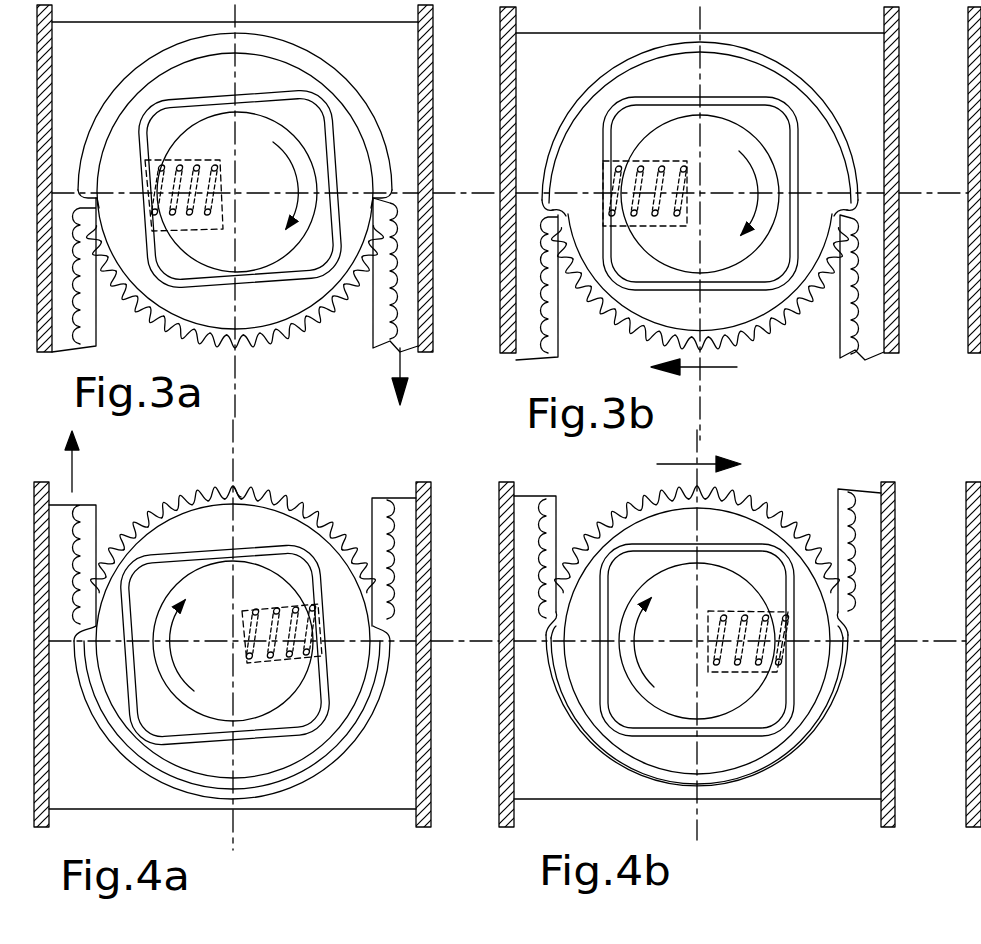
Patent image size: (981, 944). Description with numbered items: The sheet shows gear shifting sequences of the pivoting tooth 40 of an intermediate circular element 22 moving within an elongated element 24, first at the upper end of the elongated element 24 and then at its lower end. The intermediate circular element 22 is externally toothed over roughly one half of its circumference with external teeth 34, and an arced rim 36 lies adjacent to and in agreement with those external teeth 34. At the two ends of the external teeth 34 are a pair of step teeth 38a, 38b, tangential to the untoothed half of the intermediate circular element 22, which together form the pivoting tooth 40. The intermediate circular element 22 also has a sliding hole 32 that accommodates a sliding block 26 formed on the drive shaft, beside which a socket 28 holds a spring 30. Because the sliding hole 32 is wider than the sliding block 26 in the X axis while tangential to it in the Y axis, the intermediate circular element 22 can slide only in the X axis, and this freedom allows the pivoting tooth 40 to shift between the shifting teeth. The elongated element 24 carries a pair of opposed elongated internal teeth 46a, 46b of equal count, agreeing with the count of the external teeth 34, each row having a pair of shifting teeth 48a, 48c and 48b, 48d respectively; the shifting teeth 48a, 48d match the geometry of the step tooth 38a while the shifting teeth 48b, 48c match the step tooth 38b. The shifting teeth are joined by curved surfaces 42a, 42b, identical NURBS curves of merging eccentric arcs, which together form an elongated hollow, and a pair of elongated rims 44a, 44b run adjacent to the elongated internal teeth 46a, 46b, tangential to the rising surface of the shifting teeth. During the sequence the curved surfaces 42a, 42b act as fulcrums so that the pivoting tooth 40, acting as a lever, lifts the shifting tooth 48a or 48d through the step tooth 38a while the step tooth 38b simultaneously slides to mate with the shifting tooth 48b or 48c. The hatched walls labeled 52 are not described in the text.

In FIG. 4A, the intermediate circular element 22 is at (183, 534).
In FIG. 4A, the elongated element 24 is at (392, 798).
In FIG. 4A, the sliding block 26 is at (313, 723).
In FIG. 4A, the socket 28 is at (303, 684).
In FIG. 4A, the spring 30 is at (323, 624).
In FIG. 4A, the sliding hole 32 is at (130, 585).
In FIG. 4A, the external teeth 34 is at (311, 517).
In FIG. 4A, the arced rim 36 is at (245, 492).
In FIG. 3B, the step tooth 38a is at (853, 194).
In FIG. 4B, the step tooth 38a is at (556, 614).
In FIG. 3B, the step tooth 38b is at (541, 186).
In FIG. 4B, the step tooth 38b is at (842, 639).
In FIG. 4A, the pivoting tooth 40 is at (305, 708).
In FIG. 4A, the curved surface 42a is at (292, 777).
In FIG. 4B, the curved surface 42a is at (839, 693).
In FIG. 3B, the curved surface 42b is at (853, 153).
In FIG. 4A, the elongated rim 44a is at (94, 513).
In FIG. 4A, the elongated rim 44b is at (373, 519).
In FIG. 4A, the elongated internal teeth 46a is at (381, 505).
In FIG. 4A, the elongated internal teeth 46b is at (394, 553).
In FIG. 4B, the shifting tooth 48a is at (556, 611).
In FIG. 4B, the shifting tooth 48b is at (842, 623).
In FIG. 3B, the shifting tooth 48c is at (546, 212).
In FIG. 3B, the shifting tooth 48d is at (846, 211).
In FIG. 4A, the housing wall 52 is at (498, 505).
In FIG. 4B, the housing wall 52 is at (966, 510).